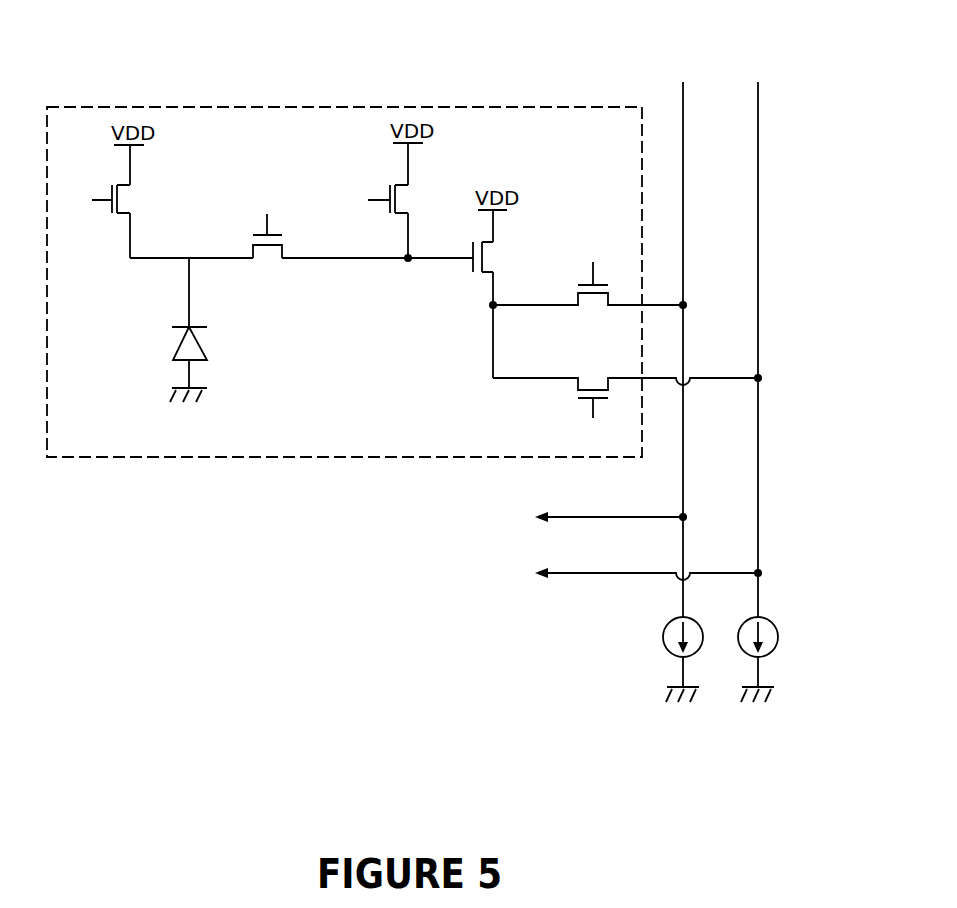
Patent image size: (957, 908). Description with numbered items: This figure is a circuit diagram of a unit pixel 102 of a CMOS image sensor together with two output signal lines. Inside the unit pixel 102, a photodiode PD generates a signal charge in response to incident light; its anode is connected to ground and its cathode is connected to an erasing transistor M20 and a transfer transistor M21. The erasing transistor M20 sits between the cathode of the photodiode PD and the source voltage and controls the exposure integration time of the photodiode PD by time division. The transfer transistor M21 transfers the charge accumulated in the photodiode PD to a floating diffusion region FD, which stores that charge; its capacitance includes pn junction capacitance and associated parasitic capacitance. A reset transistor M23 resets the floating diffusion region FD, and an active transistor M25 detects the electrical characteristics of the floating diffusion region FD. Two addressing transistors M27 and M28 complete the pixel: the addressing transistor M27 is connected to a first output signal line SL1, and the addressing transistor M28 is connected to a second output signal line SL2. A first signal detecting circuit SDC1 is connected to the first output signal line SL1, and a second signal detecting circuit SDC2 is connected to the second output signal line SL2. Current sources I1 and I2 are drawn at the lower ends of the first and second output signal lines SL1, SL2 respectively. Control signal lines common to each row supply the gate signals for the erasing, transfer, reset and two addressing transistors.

The unit pixel 102 is at (537, 106).
The erasing transistor M20 is at (112, 221).
The transfer transistor M21 is at (266, 239).
The reset transistor M23 is at (390, 221).
The active transistor M25 is at (505, 310).
The addressing transistor M27 is at (588, 286).
The addressing transistor M28 is at (625, 396).
The photodiode PD is at (173, 330).
The floating diffusion region FD is at (407, 272).
The first output signal line SL1 is at (683, 118).
The second output signal line SL2 is at (758, 118).
The first signal detecting circuit SDC1 is at (577, 518).
The second signal detecting circuit SDC2 is at (615, 575).
The first current source I1 is at (673, 659).
The second current source I2 is at (771, 659).